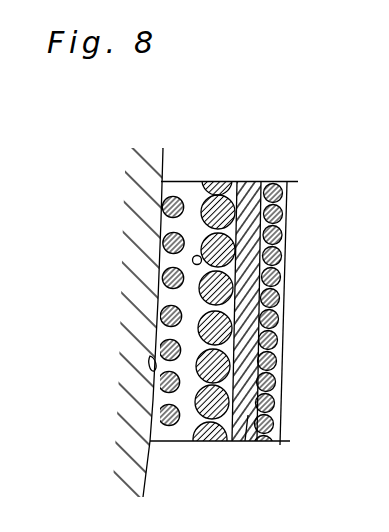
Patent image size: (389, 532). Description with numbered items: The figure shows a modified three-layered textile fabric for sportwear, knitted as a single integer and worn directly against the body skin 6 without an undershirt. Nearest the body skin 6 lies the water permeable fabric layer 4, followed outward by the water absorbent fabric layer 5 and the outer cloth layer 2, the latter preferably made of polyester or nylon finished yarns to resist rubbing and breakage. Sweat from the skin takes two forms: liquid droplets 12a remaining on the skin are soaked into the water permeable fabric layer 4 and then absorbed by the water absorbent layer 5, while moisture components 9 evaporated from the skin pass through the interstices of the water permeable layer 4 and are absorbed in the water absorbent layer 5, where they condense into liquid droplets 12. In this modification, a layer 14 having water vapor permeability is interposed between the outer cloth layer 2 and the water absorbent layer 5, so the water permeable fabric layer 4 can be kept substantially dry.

The outer cloth layer 2 is at (283, 338).
The water permeable fabric layer 4 is at (182, 197).
The water absorbent fabric layer 5 is at (244, 181).
The body skin 6 is at (137, 378).
The moisture components 9 is at (188, 261).
The liquid droplets 12 is at (194, 255).
The liquid droplets 12a is at (150, 362).
The layer having a water vapor permeability 14 is at (245, 441).